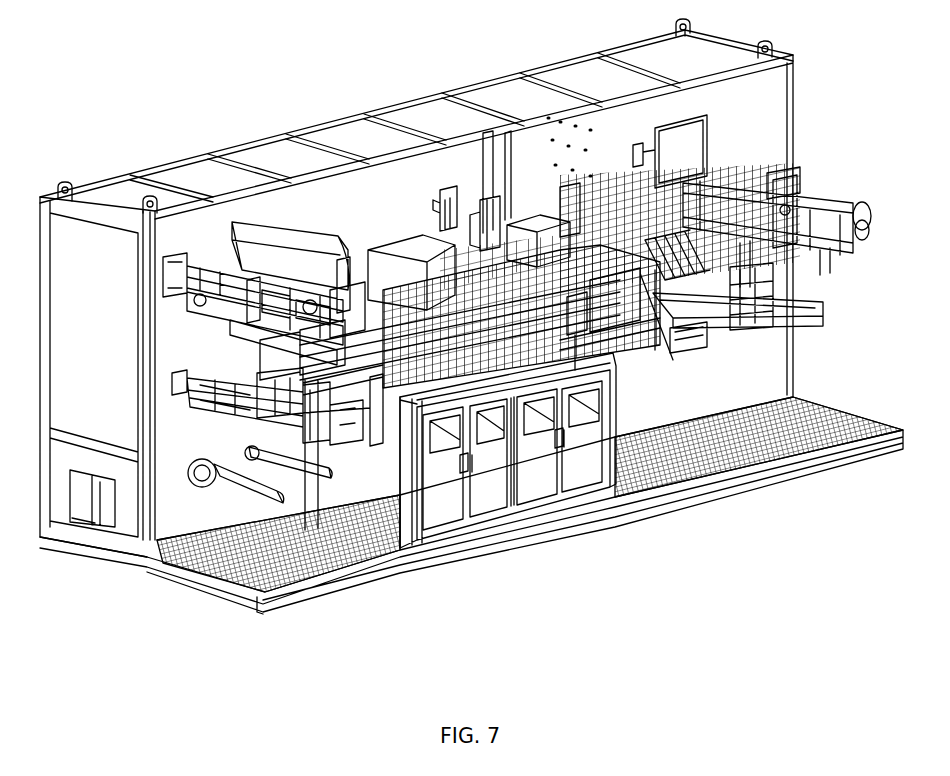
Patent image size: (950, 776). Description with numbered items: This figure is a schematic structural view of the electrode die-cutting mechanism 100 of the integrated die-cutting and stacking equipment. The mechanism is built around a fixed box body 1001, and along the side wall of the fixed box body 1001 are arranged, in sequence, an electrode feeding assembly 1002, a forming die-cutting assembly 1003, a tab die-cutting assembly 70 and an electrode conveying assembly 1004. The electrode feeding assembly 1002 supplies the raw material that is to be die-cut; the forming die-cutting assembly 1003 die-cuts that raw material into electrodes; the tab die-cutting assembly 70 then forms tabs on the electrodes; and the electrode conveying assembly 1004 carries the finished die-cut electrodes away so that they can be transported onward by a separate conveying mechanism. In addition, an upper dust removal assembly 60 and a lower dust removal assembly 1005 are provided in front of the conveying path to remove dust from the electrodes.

The electrode die-cutting mechanism 100 is at (68, 112).
The fixed box body 1001 is at (278, 158).
The electrode feeding assembly 1002 is at (302, 505).
The forming die-cutting assembly 1003 is at (460, 397).
The electrode conveying assembly 1004 is at (797, 250).
The lower dust removal assembly 1005 is at (722, 325).
The upper dust removal assembly 60 is at (612, 335).
The tab die-cutting assembly 70 is at (490, 250).